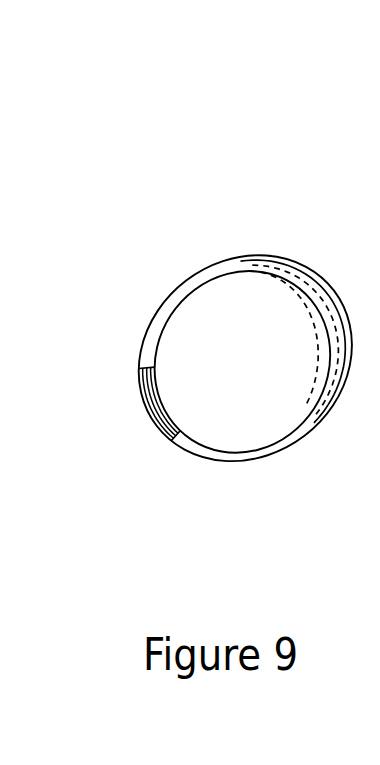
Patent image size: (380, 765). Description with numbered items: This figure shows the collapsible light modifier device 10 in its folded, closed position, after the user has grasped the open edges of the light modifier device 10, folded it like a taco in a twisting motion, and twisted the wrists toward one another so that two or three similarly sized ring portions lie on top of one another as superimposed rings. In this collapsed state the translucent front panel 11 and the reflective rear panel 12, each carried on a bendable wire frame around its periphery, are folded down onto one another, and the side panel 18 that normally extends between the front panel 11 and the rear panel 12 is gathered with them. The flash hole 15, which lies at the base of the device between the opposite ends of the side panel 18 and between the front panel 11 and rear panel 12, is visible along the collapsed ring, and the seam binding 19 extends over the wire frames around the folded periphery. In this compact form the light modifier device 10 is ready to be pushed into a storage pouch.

The light modifier device 10 is at (253, 182).
The translucent front panel 11 is at (205, 330).
The reflective rear panel 12 is at (310, 290).
The flash hole 15 is at (150, 410).
The side panel 18 is at (150, 347).
The seam binding 19 is at (193, 449).